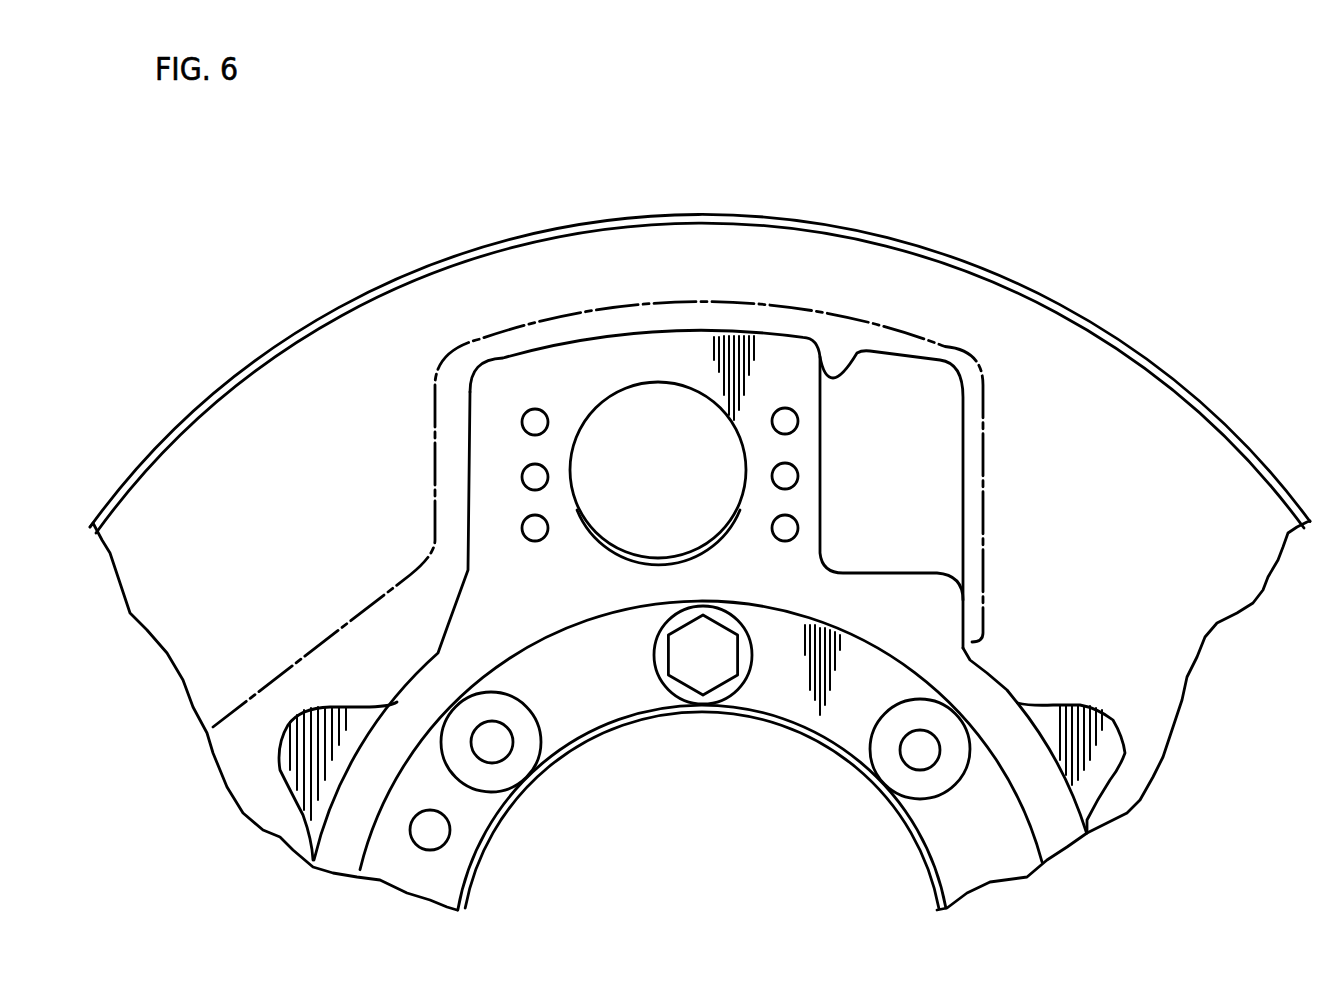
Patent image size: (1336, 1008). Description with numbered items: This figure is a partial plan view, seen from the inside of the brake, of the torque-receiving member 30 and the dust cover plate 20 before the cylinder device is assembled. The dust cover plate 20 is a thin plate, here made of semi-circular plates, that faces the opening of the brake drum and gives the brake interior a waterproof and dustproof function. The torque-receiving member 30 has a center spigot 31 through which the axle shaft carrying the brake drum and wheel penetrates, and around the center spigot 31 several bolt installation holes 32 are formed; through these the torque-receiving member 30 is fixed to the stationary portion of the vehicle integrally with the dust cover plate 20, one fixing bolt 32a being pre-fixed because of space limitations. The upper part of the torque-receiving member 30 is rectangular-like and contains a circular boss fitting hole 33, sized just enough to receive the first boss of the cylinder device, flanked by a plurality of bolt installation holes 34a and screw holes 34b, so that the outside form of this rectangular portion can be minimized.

The dust cover plate 20 is at (1163, 391).
The torque-receiving member 30 is at (448, 880).
The center spigot 31 is at (500, 818).
The bolt installation holes 32 is at (503, 748).
The fixing bolt 32a is at (707, 678).
The boss fitting hole 33 is at (640, 392).
The bolt installation holes 34a is at (532, 424).
The screw holes 34b is at (533, 482).